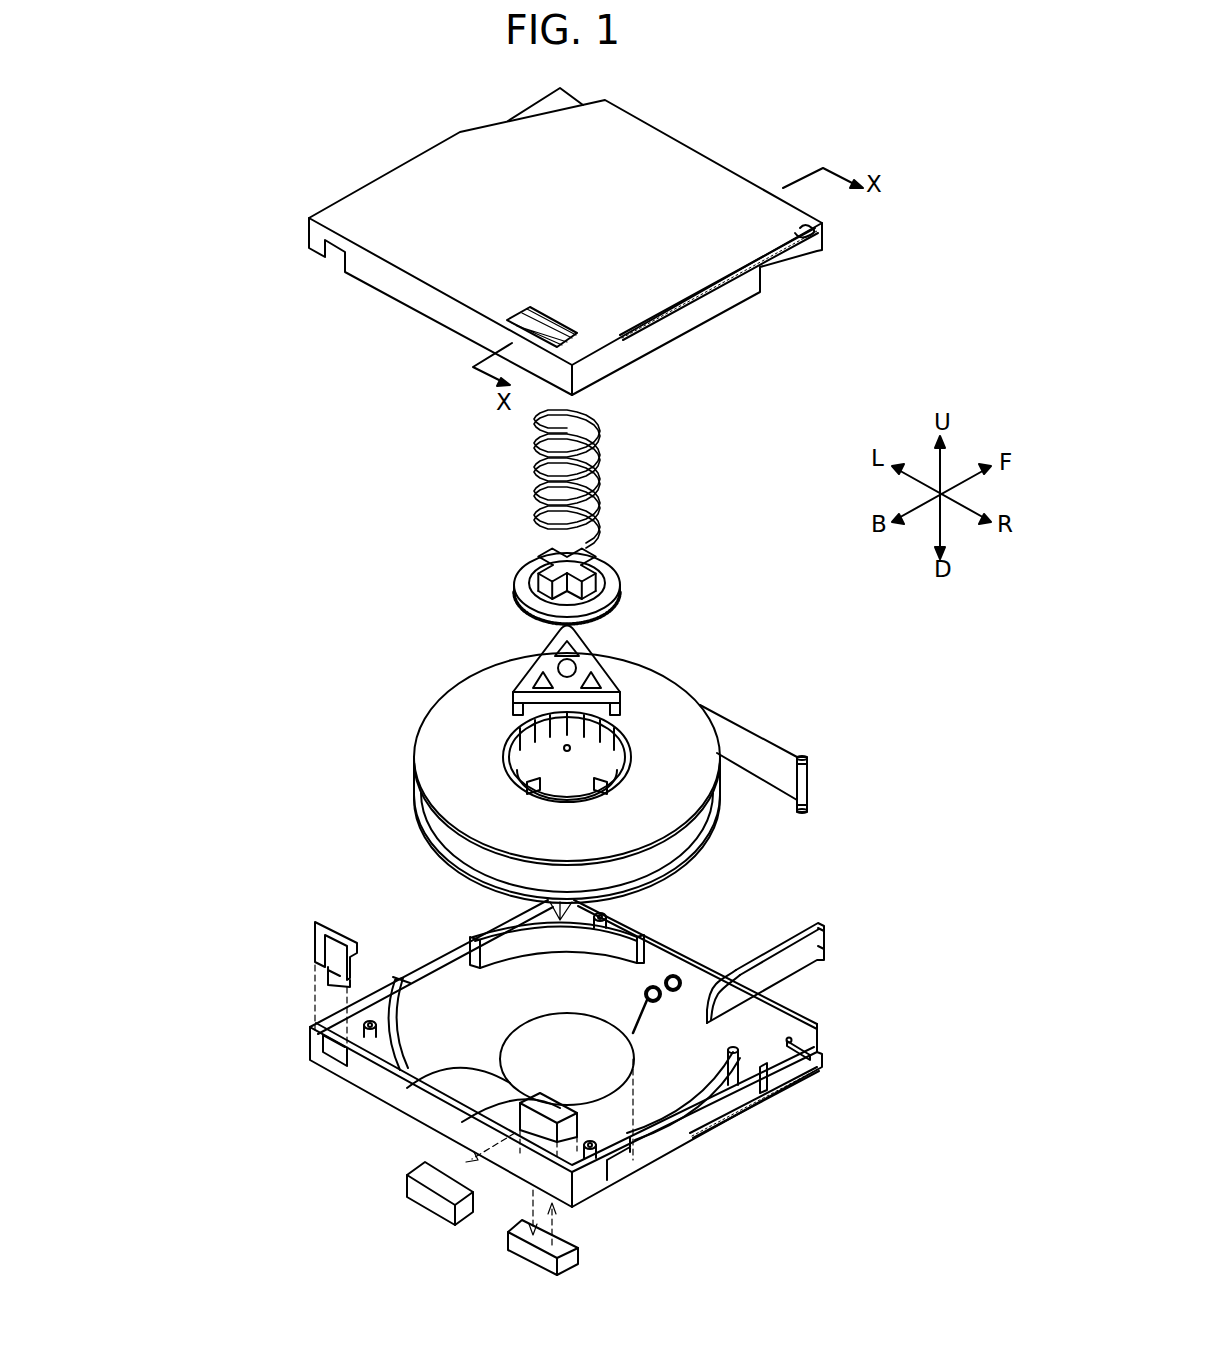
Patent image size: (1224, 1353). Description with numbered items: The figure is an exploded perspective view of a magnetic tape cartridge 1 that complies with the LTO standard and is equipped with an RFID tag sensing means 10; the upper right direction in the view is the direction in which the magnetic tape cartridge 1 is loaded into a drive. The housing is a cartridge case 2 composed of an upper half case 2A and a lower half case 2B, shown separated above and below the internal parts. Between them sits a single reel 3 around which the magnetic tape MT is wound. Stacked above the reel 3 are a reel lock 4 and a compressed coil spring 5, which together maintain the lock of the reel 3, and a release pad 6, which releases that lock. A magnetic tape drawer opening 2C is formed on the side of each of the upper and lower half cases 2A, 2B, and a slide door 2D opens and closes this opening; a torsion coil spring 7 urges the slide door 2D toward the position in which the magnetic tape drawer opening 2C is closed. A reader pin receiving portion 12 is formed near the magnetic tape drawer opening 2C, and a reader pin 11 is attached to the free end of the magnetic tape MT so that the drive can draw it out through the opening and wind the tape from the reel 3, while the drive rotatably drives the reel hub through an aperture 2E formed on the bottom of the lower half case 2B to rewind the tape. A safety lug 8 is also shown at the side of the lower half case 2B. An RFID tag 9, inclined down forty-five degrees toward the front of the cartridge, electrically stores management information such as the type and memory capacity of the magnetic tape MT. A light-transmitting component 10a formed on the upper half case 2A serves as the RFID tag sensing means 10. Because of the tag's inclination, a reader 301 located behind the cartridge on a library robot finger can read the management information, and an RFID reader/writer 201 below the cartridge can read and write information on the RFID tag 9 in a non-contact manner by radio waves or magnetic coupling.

The magnetic tape cartridge 1 is at (685, 104).
The cartridge case 2 is at (295, 528).
The upper half case 2A is at (453, 338).
The lower half case 2B is at (424, 940).
The magnetic tape drawer opening 2C is at (762, 278).
The slide door 2D is at (815, 923).
The aperture 2E is at (392, 1097).
The reel 3 is at (500, 690).
The reel lock 4 is at (612, 543).
The compressed coil spring 5 is at (600, 476).
The release pad 6 is at (603, 638).
The torsion coil spring 7 is at (684, 976).
The safety lug 8 is at (325, 922).
The RFID tag 9 is at (535, 1103).
The RFID tag sensing means 10 is at (768, 374).
The light-transmitting component 10a is at (563, 318).
The reader pin 11 is at (803, 757).
The reader pin receiving portion 12 is at (815, 1065).
The magnetic tape MT is at (750, 732).
The RFID reader/writer 201 is at (567, 1242).
The reader 301 is at (408, 1182).